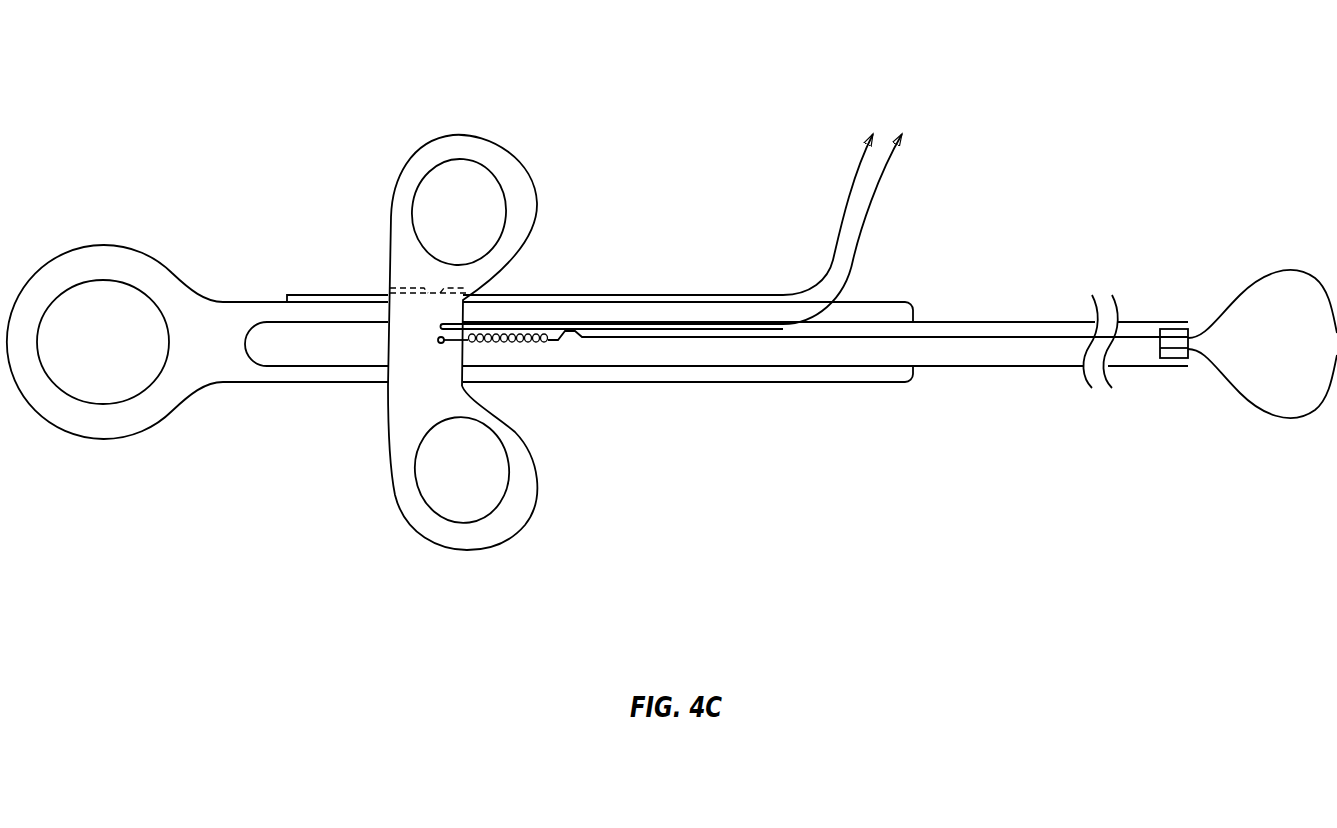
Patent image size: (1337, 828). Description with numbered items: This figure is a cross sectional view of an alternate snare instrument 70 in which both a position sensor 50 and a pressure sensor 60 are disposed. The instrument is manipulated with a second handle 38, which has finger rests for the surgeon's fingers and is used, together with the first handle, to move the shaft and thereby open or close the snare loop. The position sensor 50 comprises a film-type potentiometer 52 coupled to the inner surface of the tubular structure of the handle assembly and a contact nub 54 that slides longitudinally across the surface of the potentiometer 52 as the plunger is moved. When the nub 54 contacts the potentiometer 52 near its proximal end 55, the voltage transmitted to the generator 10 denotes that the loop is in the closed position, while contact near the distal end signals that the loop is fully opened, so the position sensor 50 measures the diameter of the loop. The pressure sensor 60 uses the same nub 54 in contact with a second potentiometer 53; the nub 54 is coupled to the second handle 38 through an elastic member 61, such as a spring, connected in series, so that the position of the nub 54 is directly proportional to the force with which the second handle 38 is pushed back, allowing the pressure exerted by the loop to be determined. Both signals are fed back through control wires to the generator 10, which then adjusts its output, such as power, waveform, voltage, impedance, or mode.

The snare instrument 70 is at (636, 89).
The position sensor 50 is at (518, 144).
The second handle 38 is at (496, 551).
The contact nub 54 is at (425, 284).
The film-type potentiometer 52 is at (569, 294).
The second potentiometer 53 is at (672, 323).
The proximal end 55 is at (574, 341).
The elastic member 61 is at (508, 346).
The pressure sensor 60 is at (681, 396).
The generator 10 is at (907, 123).